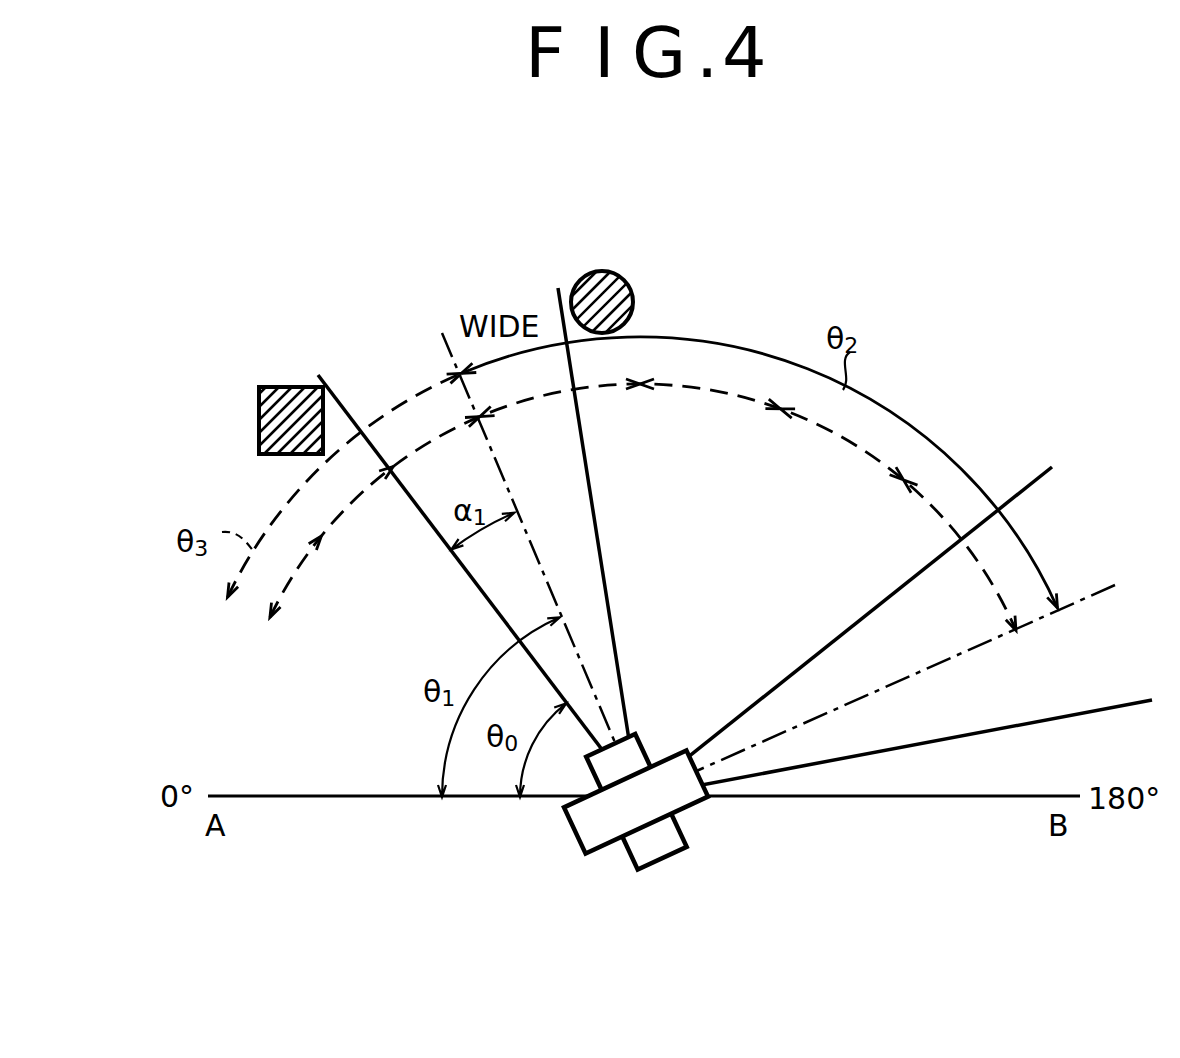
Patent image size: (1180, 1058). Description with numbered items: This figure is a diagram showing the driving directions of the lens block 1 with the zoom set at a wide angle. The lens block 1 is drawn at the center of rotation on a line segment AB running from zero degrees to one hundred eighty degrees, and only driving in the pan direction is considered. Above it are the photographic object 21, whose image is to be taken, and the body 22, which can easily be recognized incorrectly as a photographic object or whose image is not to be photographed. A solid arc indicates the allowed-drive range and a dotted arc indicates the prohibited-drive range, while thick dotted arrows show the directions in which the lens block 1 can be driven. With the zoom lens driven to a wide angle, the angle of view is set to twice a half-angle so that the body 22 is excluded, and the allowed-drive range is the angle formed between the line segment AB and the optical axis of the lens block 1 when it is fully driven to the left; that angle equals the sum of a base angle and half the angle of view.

The lens block 1 is at (578, 839).
The photographic object 21 is at (602, 271).
The body 22 is at (268, 387).